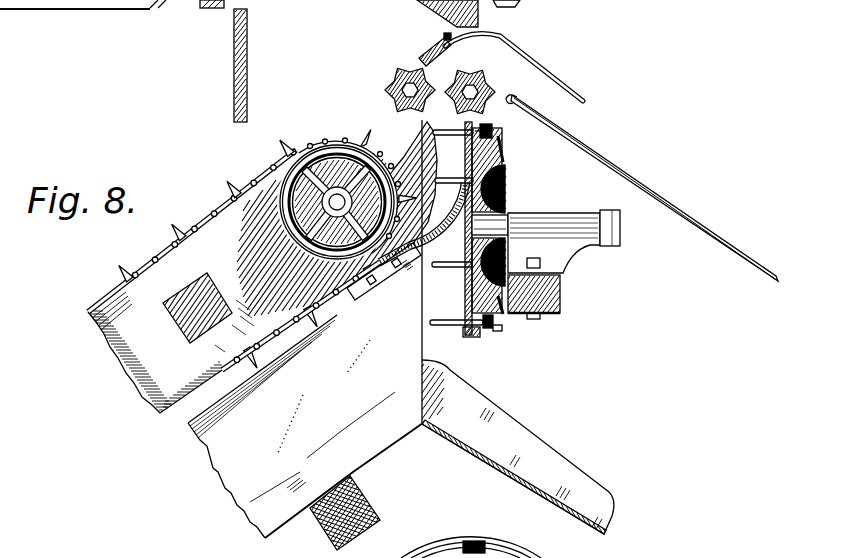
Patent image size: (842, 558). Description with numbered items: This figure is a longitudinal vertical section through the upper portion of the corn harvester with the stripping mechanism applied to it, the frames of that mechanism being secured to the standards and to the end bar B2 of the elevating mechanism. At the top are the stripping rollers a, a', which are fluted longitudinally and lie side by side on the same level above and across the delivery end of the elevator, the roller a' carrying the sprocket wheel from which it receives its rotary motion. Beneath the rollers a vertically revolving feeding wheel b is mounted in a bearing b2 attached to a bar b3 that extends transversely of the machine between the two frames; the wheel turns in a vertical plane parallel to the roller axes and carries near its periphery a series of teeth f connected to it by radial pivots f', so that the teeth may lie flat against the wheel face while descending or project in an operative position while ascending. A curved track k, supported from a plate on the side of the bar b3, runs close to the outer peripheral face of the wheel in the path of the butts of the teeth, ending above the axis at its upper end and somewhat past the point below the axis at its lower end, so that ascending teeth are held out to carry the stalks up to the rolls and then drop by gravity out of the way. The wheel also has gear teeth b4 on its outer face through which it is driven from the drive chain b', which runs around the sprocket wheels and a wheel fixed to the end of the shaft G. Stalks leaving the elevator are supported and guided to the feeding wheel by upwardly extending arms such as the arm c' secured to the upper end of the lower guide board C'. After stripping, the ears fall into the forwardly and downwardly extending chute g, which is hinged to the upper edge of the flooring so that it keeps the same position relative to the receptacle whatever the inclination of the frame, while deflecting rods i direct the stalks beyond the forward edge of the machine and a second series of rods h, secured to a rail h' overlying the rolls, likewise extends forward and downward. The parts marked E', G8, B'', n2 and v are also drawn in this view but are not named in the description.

The carriage E' is at (192, 281).
The chain lugs G8 is at (268, 249).
The shaft G is at (285, 232).
The block B'' is at (202, 312).
The lower guide board C' is at (305, 329).
The upwardly extending arm c' is at (424, 222).
The teeth f is at (456, 227).
The radial pivots f' is at (492, 234).
The rods h is at (514, 79).
The rail h' is at (432, 47).
The stripping roller a' is at (404, 89).
The stripping roller a is at (477, 90).
The hook n2 is at (517, 107).
The deflecting rods i is at (647, 183).
The feeding wheel b is at (506, 223).
The drive chain b' is at (512, 209).
The bearing b2 is at (564, 241).
The bar b3 is at (558, 297).
The gear teeth b4 is at (497, 318).
The curved track k is at (502, 329).
The guide line v is at (372, 386).
The chute g is at (518, 447).
The end bar B2 is at (317, 523).